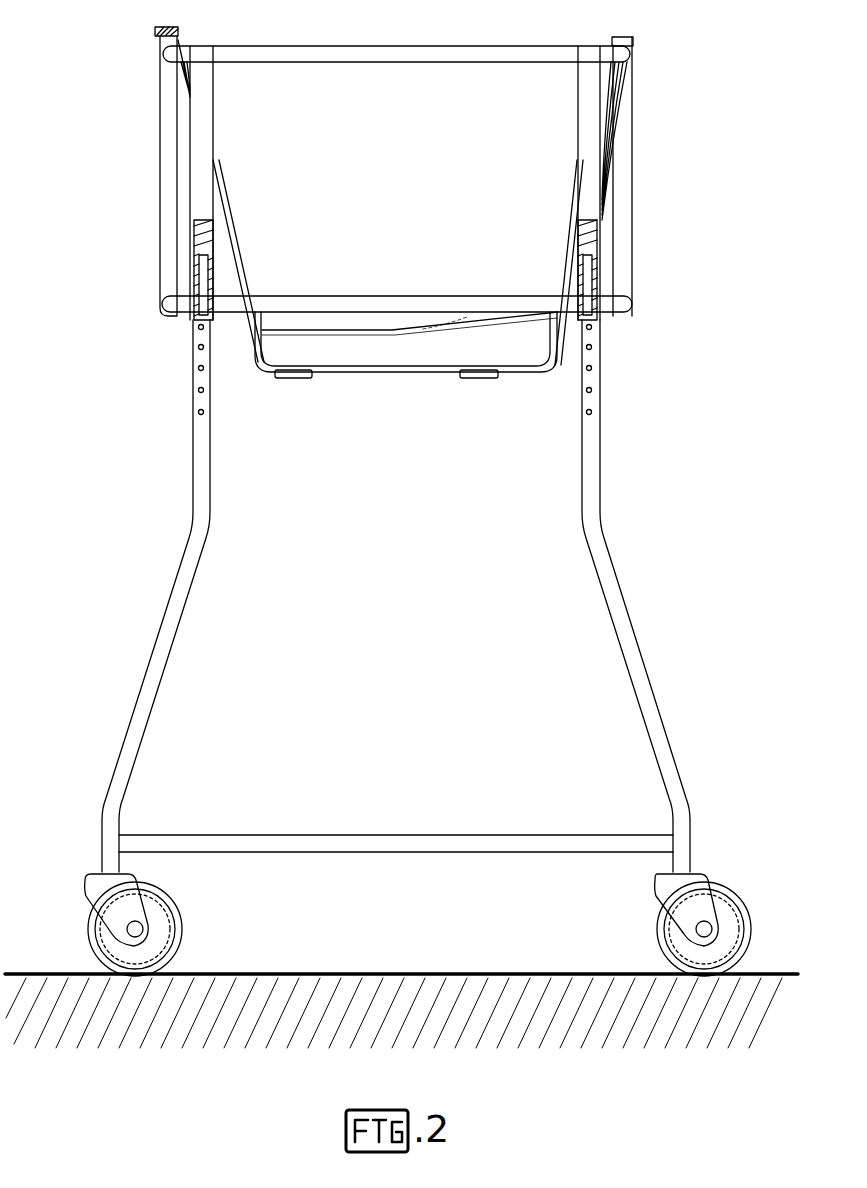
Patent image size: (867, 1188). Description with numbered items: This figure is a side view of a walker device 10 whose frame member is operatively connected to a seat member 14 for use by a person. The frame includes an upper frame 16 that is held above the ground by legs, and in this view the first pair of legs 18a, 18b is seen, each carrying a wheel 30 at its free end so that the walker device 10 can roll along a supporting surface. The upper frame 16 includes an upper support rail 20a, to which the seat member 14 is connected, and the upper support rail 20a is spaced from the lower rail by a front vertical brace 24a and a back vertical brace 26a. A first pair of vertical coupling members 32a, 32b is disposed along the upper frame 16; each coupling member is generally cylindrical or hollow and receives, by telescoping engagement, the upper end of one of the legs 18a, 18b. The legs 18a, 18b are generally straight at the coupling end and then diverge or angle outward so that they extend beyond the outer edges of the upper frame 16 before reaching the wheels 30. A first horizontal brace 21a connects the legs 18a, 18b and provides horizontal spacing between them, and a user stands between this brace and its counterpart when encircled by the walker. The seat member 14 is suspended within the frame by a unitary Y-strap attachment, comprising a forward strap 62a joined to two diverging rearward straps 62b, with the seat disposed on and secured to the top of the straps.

The walker device 10 is at (731, 242).
The seat member 14 is at (372, 380).
The upper frame 16 is at (148, 198).
The first leg 18a is at (156, 652).
The second leg of first pair 18b is at (632, 644).
The upper support rail 20a is at (318, 47).
The first horizontal brace 21a is at (282, 840).
The front vertical brace 24a is at (166, 160).
The back vertical brace 26a is at (628, 203).
The wheel 30 is at (160, 930).
The first vertical coupling member 32a is at (204, 98).
The second vertical coupling member of first pair 32b is at (579, 99).
The forward strap 62a is at (242, 288).
The rearward strap 62b is at (566, 288).